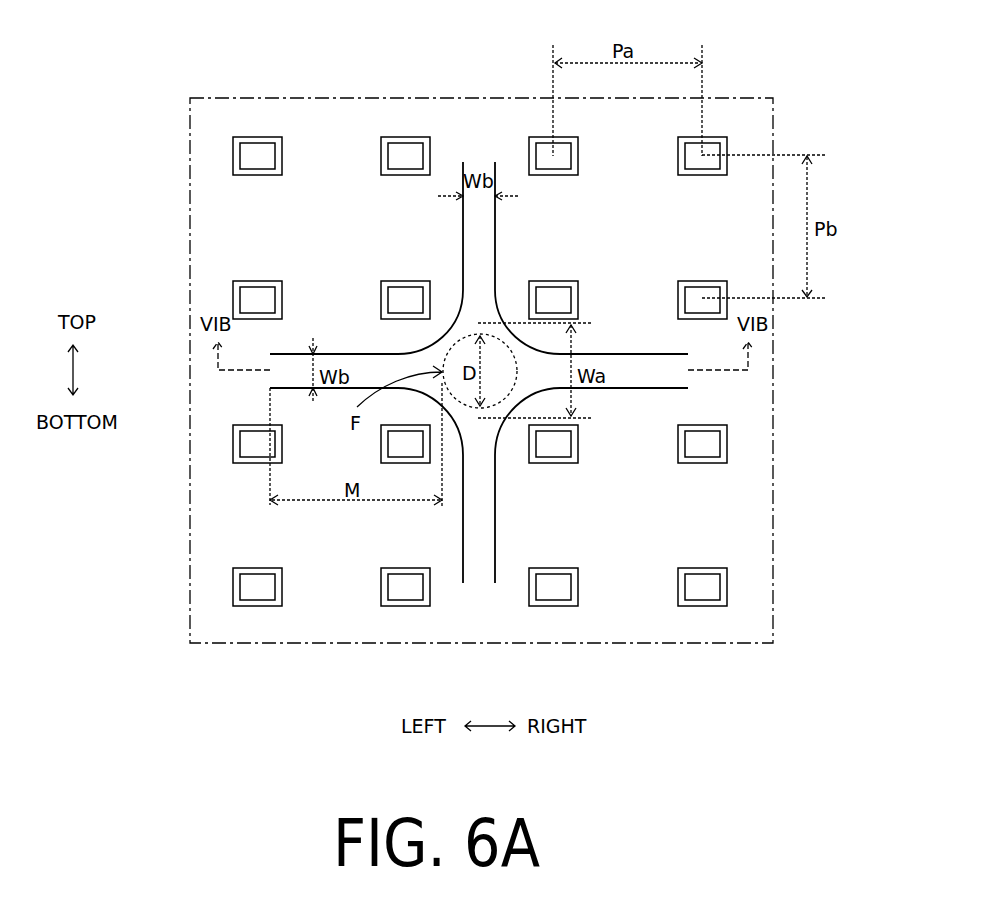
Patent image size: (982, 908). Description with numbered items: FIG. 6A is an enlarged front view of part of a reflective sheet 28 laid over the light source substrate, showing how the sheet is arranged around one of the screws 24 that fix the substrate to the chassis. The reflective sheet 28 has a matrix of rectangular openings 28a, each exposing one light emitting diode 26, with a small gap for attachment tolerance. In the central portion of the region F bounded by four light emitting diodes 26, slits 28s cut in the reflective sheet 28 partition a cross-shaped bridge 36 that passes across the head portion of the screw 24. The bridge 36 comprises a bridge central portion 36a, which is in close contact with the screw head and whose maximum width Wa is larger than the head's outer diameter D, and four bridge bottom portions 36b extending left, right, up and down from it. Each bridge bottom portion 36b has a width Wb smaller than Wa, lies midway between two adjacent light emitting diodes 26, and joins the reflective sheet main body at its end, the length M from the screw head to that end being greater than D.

The screw 24 is at (486, 418).
The light emitting diode 26 is at (257, 155).
The reflective sheet 28 is at (245, 225).
The opening 28a is at (240, 147).
The slit 28s is at (397, 355).
The bridge 36 is at (479, 372).
The bridge central portion 36a is at (452, 332).
The bridge bottom portion 36b is at (341, 352).